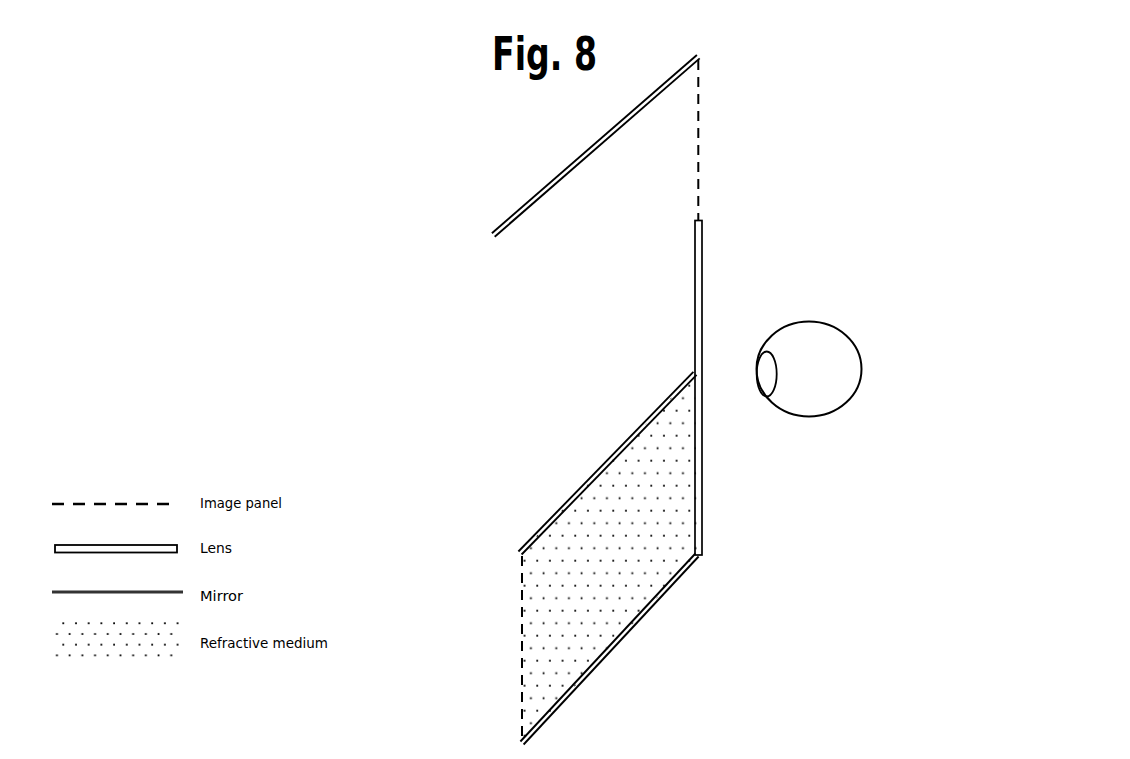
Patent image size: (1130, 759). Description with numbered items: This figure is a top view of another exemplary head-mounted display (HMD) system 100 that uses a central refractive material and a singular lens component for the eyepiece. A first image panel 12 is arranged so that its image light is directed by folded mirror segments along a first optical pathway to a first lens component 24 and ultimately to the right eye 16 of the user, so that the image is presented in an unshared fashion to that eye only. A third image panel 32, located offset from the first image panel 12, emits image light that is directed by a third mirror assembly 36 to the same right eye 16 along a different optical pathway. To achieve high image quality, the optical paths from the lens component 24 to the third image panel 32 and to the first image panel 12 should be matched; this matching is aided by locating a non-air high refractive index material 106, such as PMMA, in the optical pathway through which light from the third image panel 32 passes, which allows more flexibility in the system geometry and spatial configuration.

The head-mounted display (HMD) system 100 is at (972, 153).
The first image panel 12 is at (697, 120).
The first lens component 24 is at (697, 248).
The right eye 16 is at (862, 357).
The third mirror assembly 36 is at (654, 599).
The third image panel 32 is at (520, 635).
The high refractive index material 106 is at (693, 565).